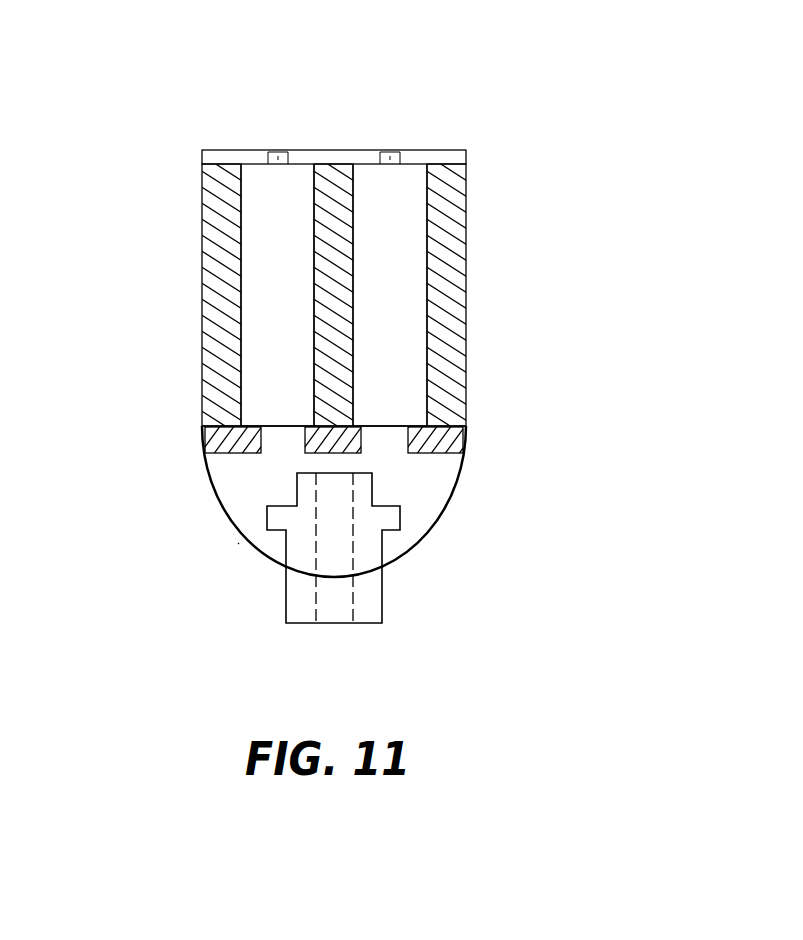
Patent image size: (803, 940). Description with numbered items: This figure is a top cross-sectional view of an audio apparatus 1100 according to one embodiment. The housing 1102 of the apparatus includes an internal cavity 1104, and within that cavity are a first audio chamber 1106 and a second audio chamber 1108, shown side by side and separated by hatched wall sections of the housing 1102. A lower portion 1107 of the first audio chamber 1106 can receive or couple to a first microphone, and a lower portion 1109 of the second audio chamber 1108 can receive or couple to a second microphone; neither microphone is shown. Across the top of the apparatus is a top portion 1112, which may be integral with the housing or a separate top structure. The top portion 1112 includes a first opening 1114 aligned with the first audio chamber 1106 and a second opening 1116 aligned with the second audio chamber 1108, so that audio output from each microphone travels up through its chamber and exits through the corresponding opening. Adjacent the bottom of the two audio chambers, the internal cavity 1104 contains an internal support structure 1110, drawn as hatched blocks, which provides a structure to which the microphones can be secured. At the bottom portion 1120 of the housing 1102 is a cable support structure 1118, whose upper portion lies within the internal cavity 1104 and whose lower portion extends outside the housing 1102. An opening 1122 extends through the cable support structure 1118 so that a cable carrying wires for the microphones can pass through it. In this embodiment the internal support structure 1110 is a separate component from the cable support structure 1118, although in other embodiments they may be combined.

The audio apparatus 1100 is at (524, 101).
The housing 1102 is at (202, 276).
The internal cavity 1104 is at (428, 490).
The first audio chamber 1106 is at (305, 267).
The lower portion of the first audio chamber 1107 is at (278, 407).
The second audio chamber 1108 is at (418, 267).
The lower portion of the second audio chamber 1109 is at (383, 407).
The internal support structure 1110 is at (205, 447).
The top portion 1112 is at (330, 150).
The first opening 1114 is at (278, 152).
The second opening 1116 is at (390, 152).
The cable support structure 1118 is at (382, 599).
The bottom portion 1120 is at (238, 543).
The opening 1122 is at (335, 610).